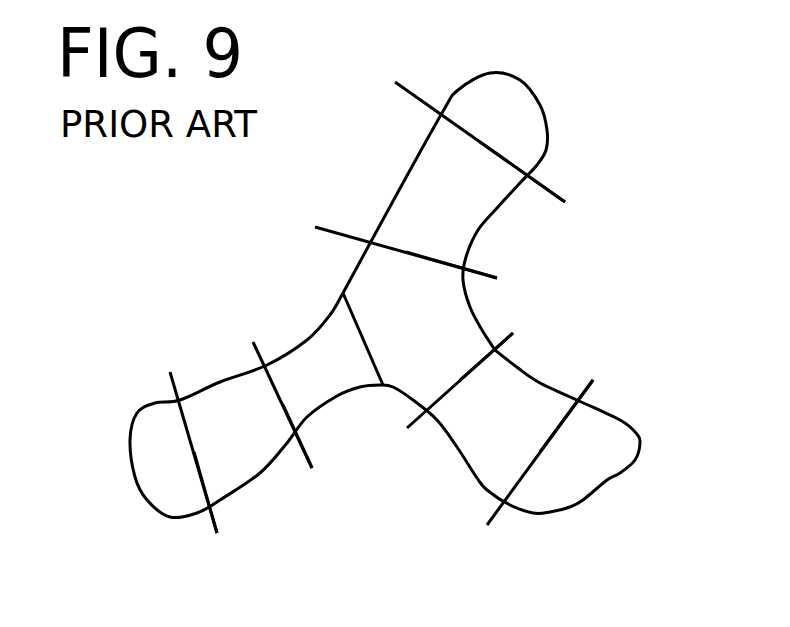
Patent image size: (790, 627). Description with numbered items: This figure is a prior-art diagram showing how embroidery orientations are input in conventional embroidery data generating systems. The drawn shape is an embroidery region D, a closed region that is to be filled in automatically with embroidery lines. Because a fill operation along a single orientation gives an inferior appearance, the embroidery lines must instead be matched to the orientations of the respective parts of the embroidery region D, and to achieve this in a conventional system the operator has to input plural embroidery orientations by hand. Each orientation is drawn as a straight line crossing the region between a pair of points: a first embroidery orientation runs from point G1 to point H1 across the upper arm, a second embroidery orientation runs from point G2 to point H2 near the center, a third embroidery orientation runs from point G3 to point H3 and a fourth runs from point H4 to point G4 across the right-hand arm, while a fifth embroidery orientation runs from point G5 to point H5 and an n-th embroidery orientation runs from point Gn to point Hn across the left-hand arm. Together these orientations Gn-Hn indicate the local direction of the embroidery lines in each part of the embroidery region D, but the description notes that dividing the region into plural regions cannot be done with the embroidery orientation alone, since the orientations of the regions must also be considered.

The embroidery region D is at (627, 498).
The embroidery orientation start point G1 is at (463, 127).
The embroidery orientation end point H1 is at (541, 186).
The embroidery orientation start point G2 is at (388, 242).
The embroidery orientation end point H2 is at (467, 275).
The embroidery orientation start point G3 is at (443, 396).
The embroidery orientation end point H3 is at (503, 341).
The embroidery orientation start point G4 is at (526, 473).
The embroidery orientation end point H4 is at (577, 399).
The embroidery orientation start point G5 is at (272, 387).
The embroidery orientation end point H5 is at (312, 455).
The embroidery orientation start point Gn is at (184, 436).
The embroidery orientation end point Hn is at (217, 511).